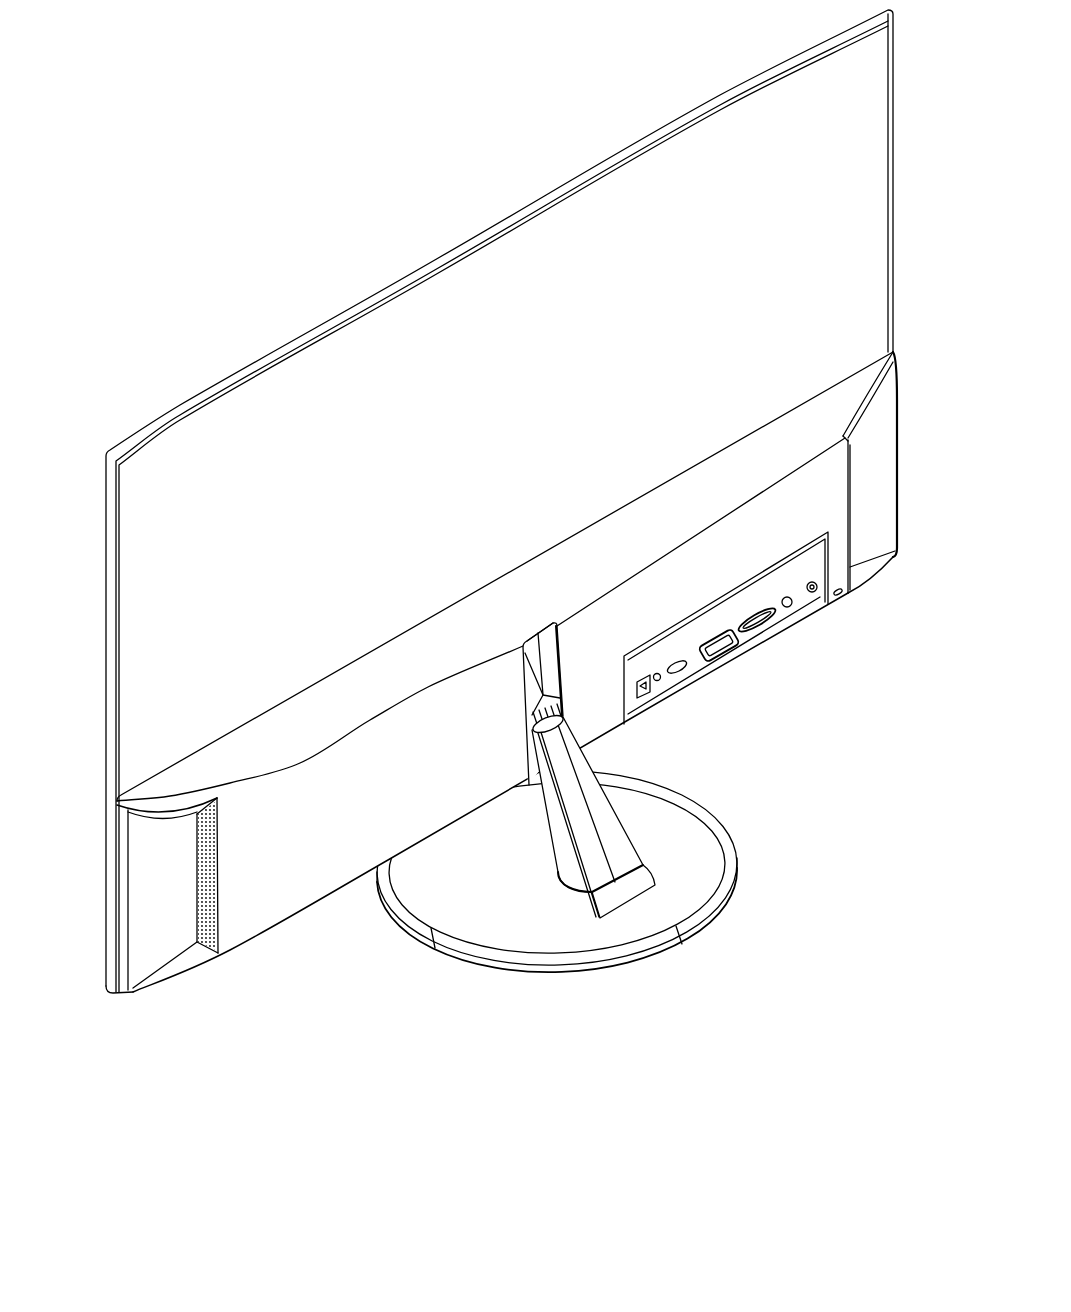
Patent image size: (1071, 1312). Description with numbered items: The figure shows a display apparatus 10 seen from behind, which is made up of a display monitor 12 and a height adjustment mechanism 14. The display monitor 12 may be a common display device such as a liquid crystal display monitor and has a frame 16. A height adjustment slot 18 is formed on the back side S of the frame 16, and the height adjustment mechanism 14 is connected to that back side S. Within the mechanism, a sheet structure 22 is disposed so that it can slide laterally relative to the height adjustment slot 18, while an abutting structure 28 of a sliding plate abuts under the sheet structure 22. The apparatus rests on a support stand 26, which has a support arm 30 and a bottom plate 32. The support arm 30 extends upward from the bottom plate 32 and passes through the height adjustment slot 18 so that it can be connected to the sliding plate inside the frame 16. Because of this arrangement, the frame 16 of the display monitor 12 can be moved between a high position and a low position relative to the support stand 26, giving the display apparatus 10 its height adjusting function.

The display apparatus 10 is at (350, 158).
The display monitor 12 is at (105, 487).
The height adjustment mechanism 14 is at (843, 708).
The frame 16 is at (140, 993).
The height adjustment slot 18 is at (525, 688).
The sheet structure 22 is at (548, 671).
The support stand 26 is at (725, 827).
The abutting structure 28 is at (545, 700).
The support arm 30 is at (590, 858).
The bottom plate 32 is at (478, 902).
The back side S is at (813, 503).